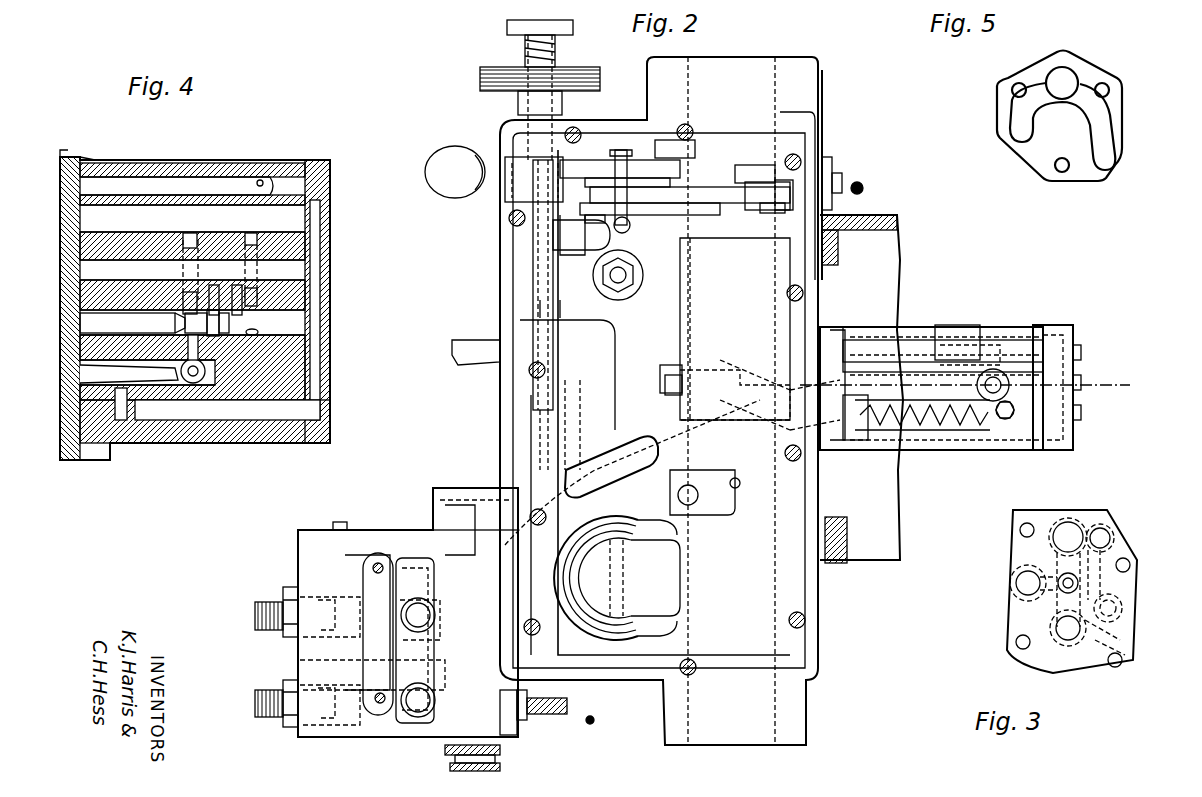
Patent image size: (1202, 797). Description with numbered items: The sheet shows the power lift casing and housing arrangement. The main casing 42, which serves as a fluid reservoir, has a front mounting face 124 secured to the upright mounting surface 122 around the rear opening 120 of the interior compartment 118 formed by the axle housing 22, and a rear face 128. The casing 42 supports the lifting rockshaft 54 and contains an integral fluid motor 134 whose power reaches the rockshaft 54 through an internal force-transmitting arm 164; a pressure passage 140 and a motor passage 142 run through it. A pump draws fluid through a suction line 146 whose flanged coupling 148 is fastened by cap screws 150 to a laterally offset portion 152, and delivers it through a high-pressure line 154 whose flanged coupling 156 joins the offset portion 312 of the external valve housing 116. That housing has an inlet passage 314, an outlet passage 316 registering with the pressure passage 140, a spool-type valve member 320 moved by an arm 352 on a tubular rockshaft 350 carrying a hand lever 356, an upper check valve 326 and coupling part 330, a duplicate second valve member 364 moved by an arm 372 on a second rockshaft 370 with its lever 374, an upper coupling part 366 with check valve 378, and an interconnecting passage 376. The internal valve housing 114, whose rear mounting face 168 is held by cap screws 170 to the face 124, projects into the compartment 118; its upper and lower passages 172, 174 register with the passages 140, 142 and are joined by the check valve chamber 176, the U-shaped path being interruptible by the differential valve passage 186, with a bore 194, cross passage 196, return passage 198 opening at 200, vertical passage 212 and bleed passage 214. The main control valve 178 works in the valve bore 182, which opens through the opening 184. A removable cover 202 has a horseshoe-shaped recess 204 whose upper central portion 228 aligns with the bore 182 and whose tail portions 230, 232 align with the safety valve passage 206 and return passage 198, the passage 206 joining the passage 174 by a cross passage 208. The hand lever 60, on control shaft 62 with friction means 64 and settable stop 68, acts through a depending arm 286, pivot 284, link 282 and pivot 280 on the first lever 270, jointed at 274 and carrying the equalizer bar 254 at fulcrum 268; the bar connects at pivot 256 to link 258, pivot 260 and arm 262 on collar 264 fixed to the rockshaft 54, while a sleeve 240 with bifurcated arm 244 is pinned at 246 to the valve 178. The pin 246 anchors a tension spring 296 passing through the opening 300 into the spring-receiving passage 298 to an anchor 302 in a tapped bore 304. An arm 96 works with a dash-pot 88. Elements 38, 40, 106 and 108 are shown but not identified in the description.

In FIG. 2, the axle housing 22 is at (818, 560).
In FIG. 2, the mounting boss 38 is at (470, 340).
In FIG. 2, the axis line 40 is at (510, 291).
In FIG. 4, the main casing 42 is at (62, 152).
In FIG. 2, the main casing 42 is at (505, 266).
In FIG. 2, the rockshaft 54 is at (790, 652).
In FIG. 2, the hand lever 60 is at (552, 716).
In FIG. 2, the control shaft 62 is at (560, 690).
In FIG. 2, the friction means 64 is at (480, 68).
In FIG. 2, the settable stop 68 is at (586, 716).
In FIG. 2, the dash-pot 88 is at (625, 305).
In FIG. 2, the arm 96 is at (530, 246).
In FIG. 2, the nut 106 is at (650, 288).
In FIG. 2, the stud 108 is at (628, 275).
In FIG. 4, the internal valve housing 114 is at (252, 152).
In FIG. 2, the internal valve housing 114 is at (1075, 324).
In FIG. 3, the internal valve housing 114 is at (1000, 549).
In FIG. 2, the external valve housing 116 is at (290, 550).
In FIG. 2, the interior compartment 118 is at (898, 253).
In FIG. 2, the rear opening 120 is at (838, 262).
In FIG. 2, the upright mounting surface 122 is at (838, 243).
In FIG. 4, the front mounting face 124 is at (88, 157).
In FIG. 2, the rear face 128 is at (510, 497).
In FIG. 2, the fluid motor 134 is at (648, 643).
In FIG. 4, the pressure passage 140 is at (70, 321).
In FIG. 2, the pressure passage 140 is at (625, 488).
In FIG. 4, the motor passage 142 is at (70, 371).
In FIG. 2, the suction line 146 is at (863, 186).
In FIG. 2, the flanged coupling 148 is at (838, 157).
In FIG. 2, the cap screws 150 is at (845, 180).
In FIG. 2, the laterally offset casing portion 152 is at (824, 148).
In FIG. 2, the high-pressure line 154 is at (588, 730).
In FIG. 2, the flanged coupling 156 is at (518, 740).
In FIG. 2, the internal force-transmitting arm 164 is at (718, 628).
In FIG. 2, the rear mounting face 168 is at (800, 338).
In FIG. 3, the rear mounting face 168 is at (1013, 515).
In FIG. 2, the cap screws 170 is at (850, 330).
In FIG. 4, the upper passage 172 is at (192, 322).
In FIG. 3, the upper passage 172 is at (1068, 583).
In FIG. 4, the lower passage 174 is at (147, 372).
In FIG. 3, the lower passage 174 is at (1075, 640).
In FIG. 4, the check valve chamber 176 is at (188, 340).
In FIG. 3, the check valve chamber 176 is at (1060, 610).
In FIG. 2, the main control valve 178 is at (665, 393).
In FIG. 4, the valve bore 182 is at (192, 218).
In FIG. 3, the valve bore 182 is at (1068, 530).
In FIG. 4, the opening 184 is at (62, 210).
In FIG. 4, the differential valve passage 186 is at (230, 321).
In FIG. 4, the differential valve bore 194 is at (300, 312).
In FIG. 4, the cross passage 196 is at (220, 277).
In FIG. 3, the cross passage 196 is at (1055, 610).
In FIG. 4, the return passage 198 is at (192, 270).
In FIG. 3, the return passage 198 is at (1028, 583).
In FIG. 4, the return passage opening 200 is at (70, 268).
In FIG. 4, the removable cover 202 is at (322, 372).
In FIG. 2, the removable cover 202 is at (1060, 325).
In FIG. 5, the removable cover 202 is at (1090, 65).
In FIG. 4, the horseshoe-shaped recess 204 is at (318, 393).
In FIG. 2, the horseshoe-shaped recess 204 is at (1082, 355).
In FIG. 5, the horseshoe-shaped recess 204 is at (1105, 118).
In FIG. 4, the safety valve passage 206 is at (243, 443).
In FIG. 2, the safety valve passage 206 is at (1020, 325).
In FIG. 3, the safety valve passage 206 is at (1110, 615).
In FIG. 4, the short cross passage 208 is at (118, 445).
In FIG. 2, the short cross passage 208 is at (840, 465).
In FIG. 3, the short cross passage 208 is at (1120, 635).
In FIG. 4, the short vertical passage 212 is at (255, 235).
In FIG. 4, the bleed passage 214 is at (250, 277).
In FIG. 3, the bleed passage 214 is at (1040, 605).
In FIG. 4, the upper central portion 228 is at (322, 212).
In FIG. 5, the upper central portion 228 is at (1062, 68).
In FIG. 5, the right-hand tail portion 230 is at (1103, 153).
In FIG. 5, the left-hand tail portion 232 is at (1018, 125).
In FIG. 2, the sleeve 240 is at (735, 329).
In FIG. 2, the bifurcated arm part 244 is at (663, 370).
In FIG. 2, the pivot pin 246 is at (706, 368).
In FIG. 2, the equalizer bar 254 is at (690, 218).
In FIG. 2, the pivot 256 is at (672, 218).
In FIG. 2, the forwardly extending link 258 is at (700, 186).
In FIG. 2, the pivot 260 is at (783, 212).
In FIG. 2, the upright arm 262 is at (755, 182).
In FIG. 2, the collar 264 is at (738, 162).
In FIG. 2, the fulcrum pivot 268 is at (622, 233).
In FIG. 2, the first lever 270 is at (590, 162).
In FIG. 2, the pivot 274 is at (655, 140).
In FIG. 2, the pivot 280 is at (620, 150).
In FIG. 2, the rearwardly extending link 282 is at (588, 160).
In FIG. 2, the pivot 284 is at (500, 112).
In FIG. 2, the depending arm 286 is at (505, 220).
In FIG. 2, the coiled tension spring 296 is at (930, 435).
In FIG. 4, the spring-receiving passage 298 is at (180, 176).
In FIG. 4, the spring-receiving opening 300 is at (58, 162).
In FIG. 2, the spring anchor 302 is at (1005, 425).
In FIG. 4, the tapped bore 304 is at (270, 170).
In FIG. 2, the offset forward portion 312 is at (520, 728).
In FIG. 2, the fluid inlet passage 314 is at (525, 745).
In FIG. 2, the outlet passage 316 is at (440, 590).
In FIG. 2, the spool-type valve member 320 is at (410, 710).
In FIG. 2, the upper check valve 326 is at (348, 725).
In FIG. 2, the male coupling part 330 is at (262, 718).
In FIG. 2, the rockshaft 350 is at (445, 750).
In FIG. 2, the arm 352 is at (398, 668).
In FIG. 2, the hand lever 356 is at (455, 760).
In FIG. 2, the second valve member 364 is at (418, 626).
In FIG. 2, the upper coupling part 366 is at (255, 605).
In FIG. 2, the second valve control rockshaft 370 is at (450, 540).
In FIG. 2, the arm 372 is at (385, 560).
In FIG. 2, the second manual lever 374 is at (490, 772).
In FIG. 2, the interconnecting passage 376 is at (420, 633).
In FIG. 2, the upper check valve 378 is at (365, 588).